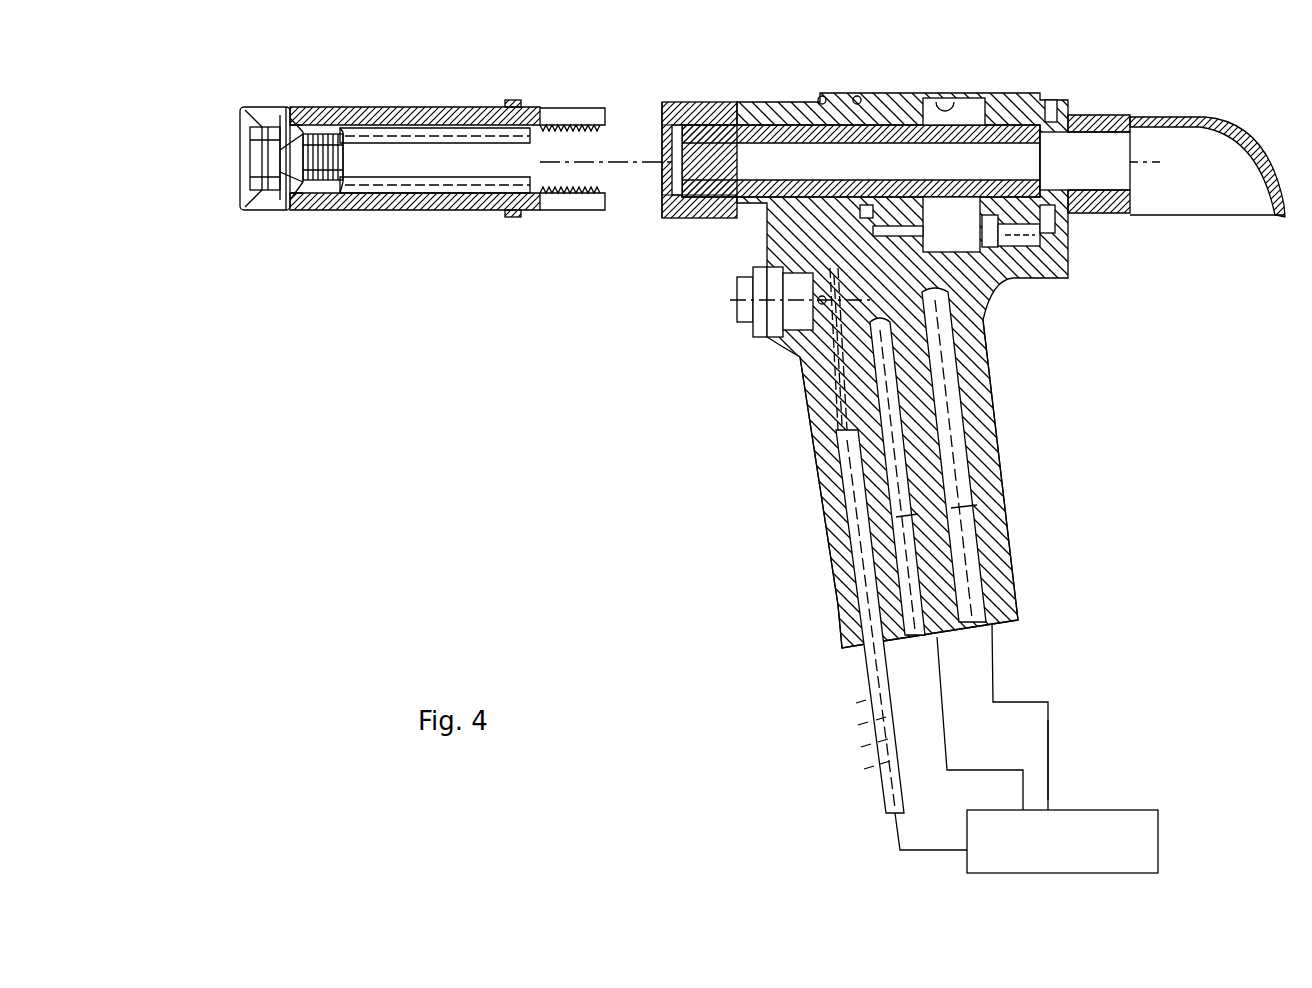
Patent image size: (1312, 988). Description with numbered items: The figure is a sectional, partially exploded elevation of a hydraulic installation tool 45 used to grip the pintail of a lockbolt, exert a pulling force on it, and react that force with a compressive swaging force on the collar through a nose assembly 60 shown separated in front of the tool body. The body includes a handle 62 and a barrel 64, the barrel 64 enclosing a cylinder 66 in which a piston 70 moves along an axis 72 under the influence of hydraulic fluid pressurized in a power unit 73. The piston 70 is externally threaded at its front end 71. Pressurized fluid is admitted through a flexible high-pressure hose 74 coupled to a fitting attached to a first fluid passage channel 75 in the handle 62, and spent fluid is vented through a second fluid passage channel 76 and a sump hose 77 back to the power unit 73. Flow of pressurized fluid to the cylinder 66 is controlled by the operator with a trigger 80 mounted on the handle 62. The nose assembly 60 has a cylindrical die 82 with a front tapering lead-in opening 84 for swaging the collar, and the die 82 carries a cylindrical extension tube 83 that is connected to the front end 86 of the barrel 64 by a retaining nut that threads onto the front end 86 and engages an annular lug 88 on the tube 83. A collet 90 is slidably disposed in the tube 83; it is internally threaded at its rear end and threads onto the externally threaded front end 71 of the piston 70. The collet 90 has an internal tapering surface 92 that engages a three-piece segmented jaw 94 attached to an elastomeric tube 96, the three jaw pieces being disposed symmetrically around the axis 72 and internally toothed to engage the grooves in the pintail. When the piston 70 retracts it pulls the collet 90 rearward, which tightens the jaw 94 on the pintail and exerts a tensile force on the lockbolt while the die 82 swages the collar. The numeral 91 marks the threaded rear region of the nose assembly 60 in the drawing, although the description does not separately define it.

The installation tool 45 is at (1097, 357).
The nose assembly 60 is at (382, 201).
The handle 62 is at (958, 559).
The barrel 64 is at (867, 94).
The cylinder 66 is at (967, 97).
The piston 70 is at (974, 339).
The front end of piston 71 is at (672, 220).
The axis 72 is at (637, 152).
The power unit 73 is at (1137, 810).
The high-pressure hose 74 is at (980, 777).
The first fluid passage channel 75 is at (940, 642).
The second fluid passage channel 76 is at (996, 628).
The sump hose 77 is at (1050, 753).
The trigger 80 is at (735, 327).
The die 82 is at (258, 118).
The extension tube 83 is at (413, 105).
The lead-in opening 84 is at (246, 145).
The front end of barrel 86 is at (683, 98).
The annular lug 88 is at (513, 222).
The collet 90 is at (310, 194).
The threaded end 91 is at (598, 197).
The internal tapering surface 92 is at (266, 156).
The segmented jaw 94 is at (318, 132).
The elastomeric tube 96 is at (433, 145).